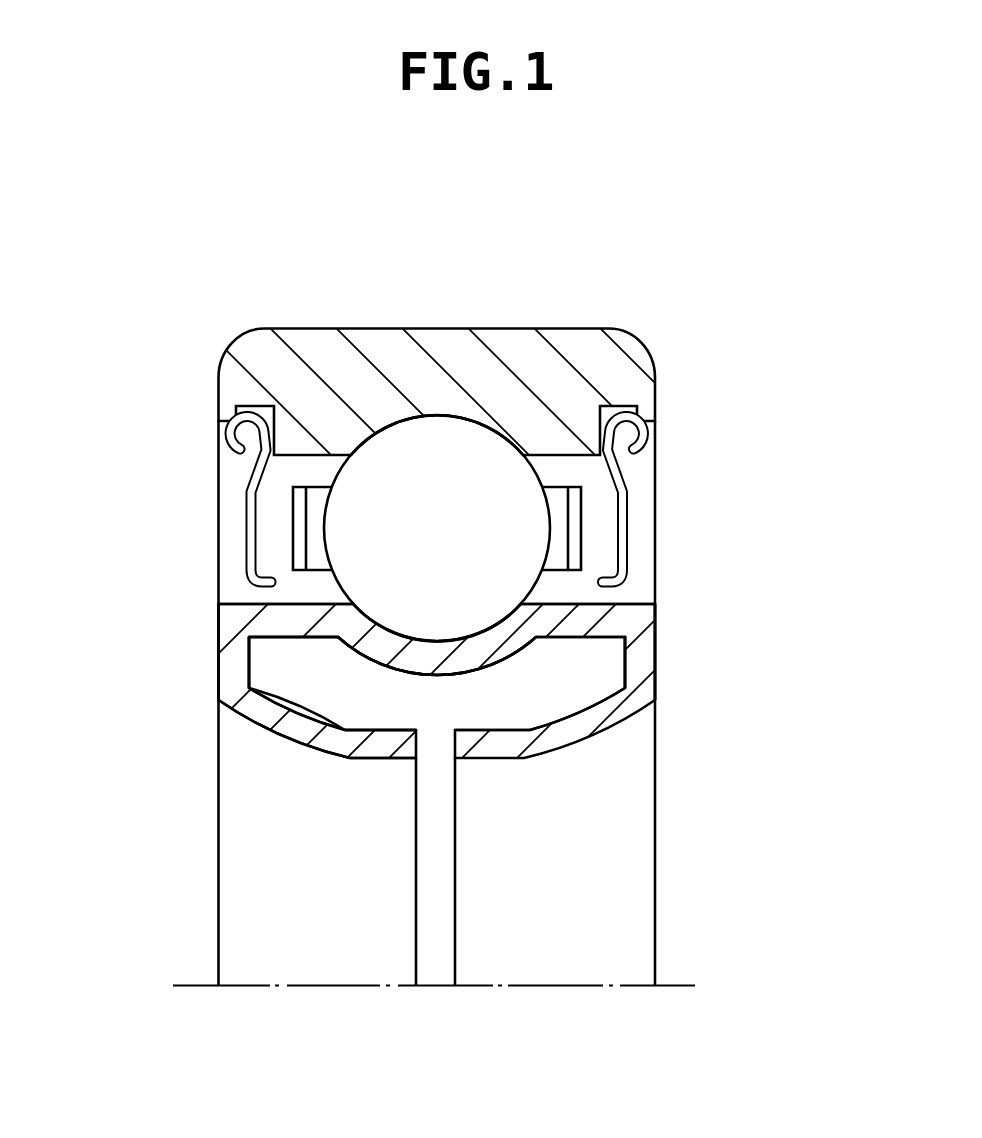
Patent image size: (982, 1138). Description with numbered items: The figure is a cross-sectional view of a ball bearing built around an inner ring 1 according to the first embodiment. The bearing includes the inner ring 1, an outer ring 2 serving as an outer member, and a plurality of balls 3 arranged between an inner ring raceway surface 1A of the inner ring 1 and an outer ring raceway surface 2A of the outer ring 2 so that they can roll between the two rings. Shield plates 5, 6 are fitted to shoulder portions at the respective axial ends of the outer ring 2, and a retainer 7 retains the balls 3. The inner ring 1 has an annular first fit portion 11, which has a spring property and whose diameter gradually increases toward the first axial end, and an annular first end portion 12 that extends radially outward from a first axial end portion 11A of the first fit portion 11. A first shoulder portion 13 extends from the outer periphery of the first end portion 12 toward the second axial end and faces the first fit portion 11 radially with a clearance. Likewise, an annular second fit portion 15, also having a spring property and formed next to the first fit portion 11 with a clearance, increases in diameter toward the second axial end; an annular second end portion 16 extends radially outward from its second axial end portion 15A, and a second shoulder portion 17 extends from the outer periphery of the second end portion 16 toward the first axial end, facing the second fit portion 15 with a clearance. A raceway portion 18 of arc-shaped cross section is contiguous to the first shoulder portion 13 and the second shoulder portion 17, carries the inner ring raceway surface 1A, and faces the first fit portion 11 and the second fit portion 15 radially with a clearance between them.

The inner ring 1 is at (217, 655).
The inner ring raceway surface 1A is at (413, 642).
The outer ring 2 is at (217, 380).
The outer ring raceway surface 2A is at (370, 438).
The ball 3 is at (488, 507).
The shield plate 5 is at (250, 508).
The shield plate 6 is at (628, 520).
The retainer 7 is at (582, 503).
The first fit portion 11 is at (540, 743).
The first axial end portion 11A is at (627, 710).
The first end portion 12 is at (640, 658).
The first shoulder portion 13 is at (617, 604).
The second fit portion 15 is at (353, 743).
The second axial end portion 15A is at (248, 713).
The second end portion 16 is at (235, 664).
The second shoulder portion 17 is at (280, 623).
The raceway portion 18 is at (445, 657).